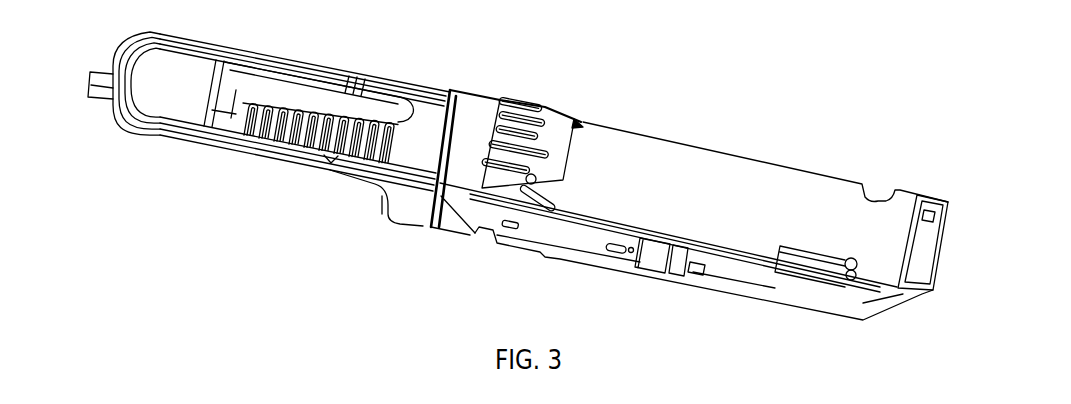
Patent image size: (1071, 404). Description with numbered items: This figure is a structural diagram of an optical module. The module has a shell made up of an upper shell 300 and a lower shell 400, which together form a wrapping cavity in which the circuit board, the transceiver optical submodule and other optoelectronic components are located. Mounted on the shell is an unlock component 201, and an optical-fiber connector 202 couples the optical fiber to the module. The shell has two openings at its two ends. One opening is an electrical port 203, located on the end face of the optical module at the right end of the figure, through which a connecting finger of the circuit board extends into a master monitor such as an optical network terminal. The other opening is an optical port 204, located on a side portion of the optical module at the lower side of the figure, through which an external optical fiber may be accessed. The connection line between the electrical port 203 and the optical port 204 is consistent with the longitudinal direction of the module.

The unlock component 201 is at (418, 112).
The optical-fiber connector 202 is at (383, 142).
The opening (electrical port) 203 is at (940, 283).
The opening (optical port) 204 is at (362, 206).
The upper shell 300 is at (722, 152).
The lower shell 400 is at (737, 283).